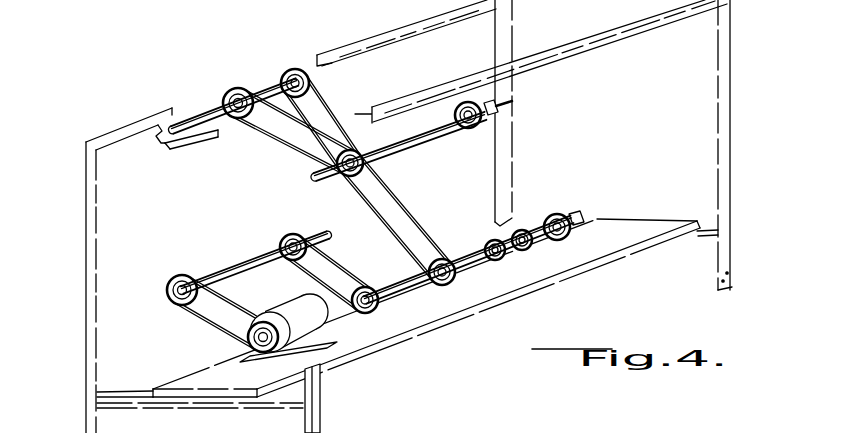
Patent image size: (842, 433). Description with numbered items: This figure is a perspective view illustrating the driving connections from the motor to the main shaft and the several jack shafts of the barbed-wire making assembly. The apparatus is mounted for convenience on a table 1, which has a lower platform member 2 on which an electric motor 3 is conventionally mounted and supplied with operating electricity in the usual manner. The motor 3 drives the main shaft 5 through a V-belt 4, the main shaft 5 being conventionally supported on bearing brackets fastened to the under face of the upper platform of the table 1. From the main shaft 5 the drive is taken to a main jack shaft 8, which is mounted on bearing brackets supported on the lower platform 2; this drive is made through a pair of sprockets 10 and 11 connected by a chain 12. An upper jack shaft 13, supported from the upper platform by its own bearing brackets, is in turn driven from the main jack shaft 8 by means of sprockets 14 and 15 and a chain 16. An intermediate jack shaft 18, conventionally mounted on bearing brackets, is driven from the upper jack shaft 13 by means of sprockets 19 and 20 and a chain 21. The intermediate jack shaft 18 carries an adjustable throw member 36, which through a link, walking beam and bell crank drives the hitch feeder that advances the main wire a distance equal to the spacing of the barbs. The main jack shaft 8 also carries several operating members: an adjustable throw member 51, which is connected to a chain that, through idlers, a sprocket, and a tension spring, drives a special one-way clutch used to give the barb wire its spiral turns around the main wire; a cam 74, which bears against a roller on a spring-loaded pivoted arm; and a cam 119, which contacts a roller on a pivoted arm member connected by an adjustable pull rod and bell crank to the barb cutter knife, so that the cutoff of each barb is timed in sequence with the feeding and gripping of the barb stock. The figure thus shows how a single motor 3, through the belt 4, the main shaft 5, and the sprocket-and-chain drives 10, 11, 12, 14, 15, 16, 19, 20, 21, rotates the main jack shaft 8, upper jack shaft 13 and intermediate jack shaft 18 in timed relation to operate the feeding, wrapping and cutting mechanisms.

The table 1 is at (85, 353).
The lower platform member 2 is at (436, 322).
The electric motor 3 is at (295, 312).
The V-belt 4 is at (206, 322).
The main shaft 5 is at (241, 262).
The main jack shaft 8 is at (403, 291).
The sprocket 10 is at (282, 245).
The sprocket 11 is at (376, 307).
The chain 12 is at (333, 257).
The upper jack shaft 13 is at (190, 116).
The sprocket 14 is at (436, 260).
The sprocket 15 is at (291, 72).
The chain 16 is at (406, 196).
The intermediate jack shaft 18 is at (427, 142).
The sprocket 19 is at (239, 120).
The sprocket 20 is at (346, 177).
The chain 21 is at (280, 150).
The adjustable throw member 36 is at (480, 130).
The adjustable throw member 51 is at (566, 214).
The cam 74 is at (517, 228).
The cam 119 is at (490, 242).